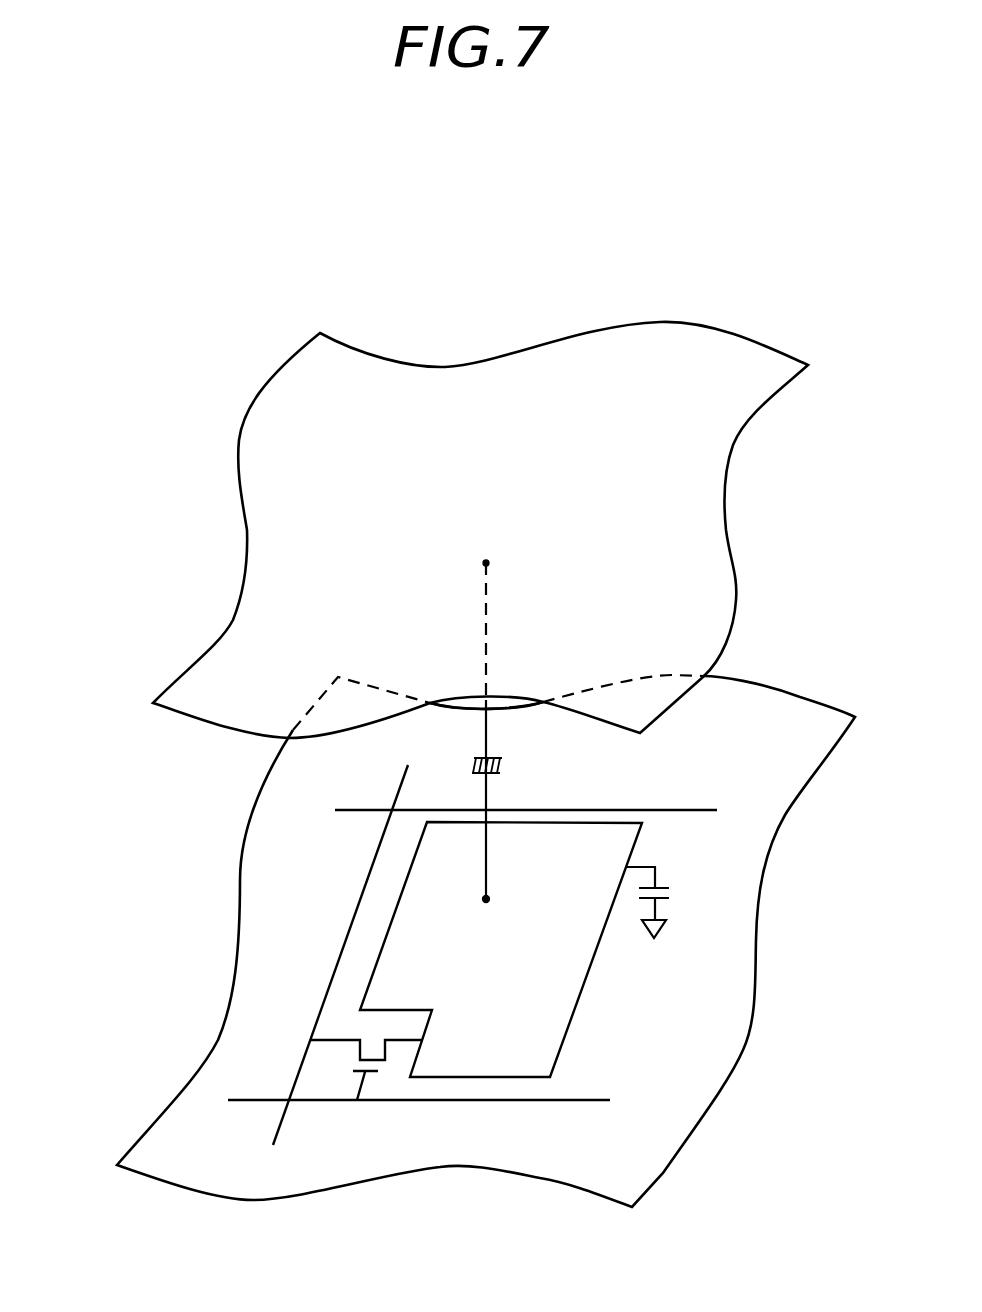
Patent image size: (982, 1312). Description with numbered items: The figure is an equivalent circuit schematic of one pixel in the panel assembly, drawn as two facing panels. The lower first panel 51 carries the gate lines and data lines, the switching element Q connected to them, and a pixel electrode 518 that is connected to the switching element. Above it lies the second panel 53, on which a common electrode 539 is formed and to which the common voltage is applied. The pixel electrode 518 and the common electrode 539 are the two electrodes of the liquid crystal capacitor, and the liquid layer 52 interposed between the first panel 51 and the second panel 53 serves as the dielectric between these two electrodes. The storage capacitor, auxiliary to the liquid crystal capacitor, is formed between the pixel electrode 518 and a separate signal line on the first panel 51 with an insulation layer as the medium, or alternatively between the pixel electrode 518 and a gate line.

The first panel 51 is at (775, 915).
The liquid layer 52 is at (142, 825).
The second panel 53 is at (500, 530).
The pixel electrode 518 is at (577, 1008).
The common electrode 539 is at (752, 563).